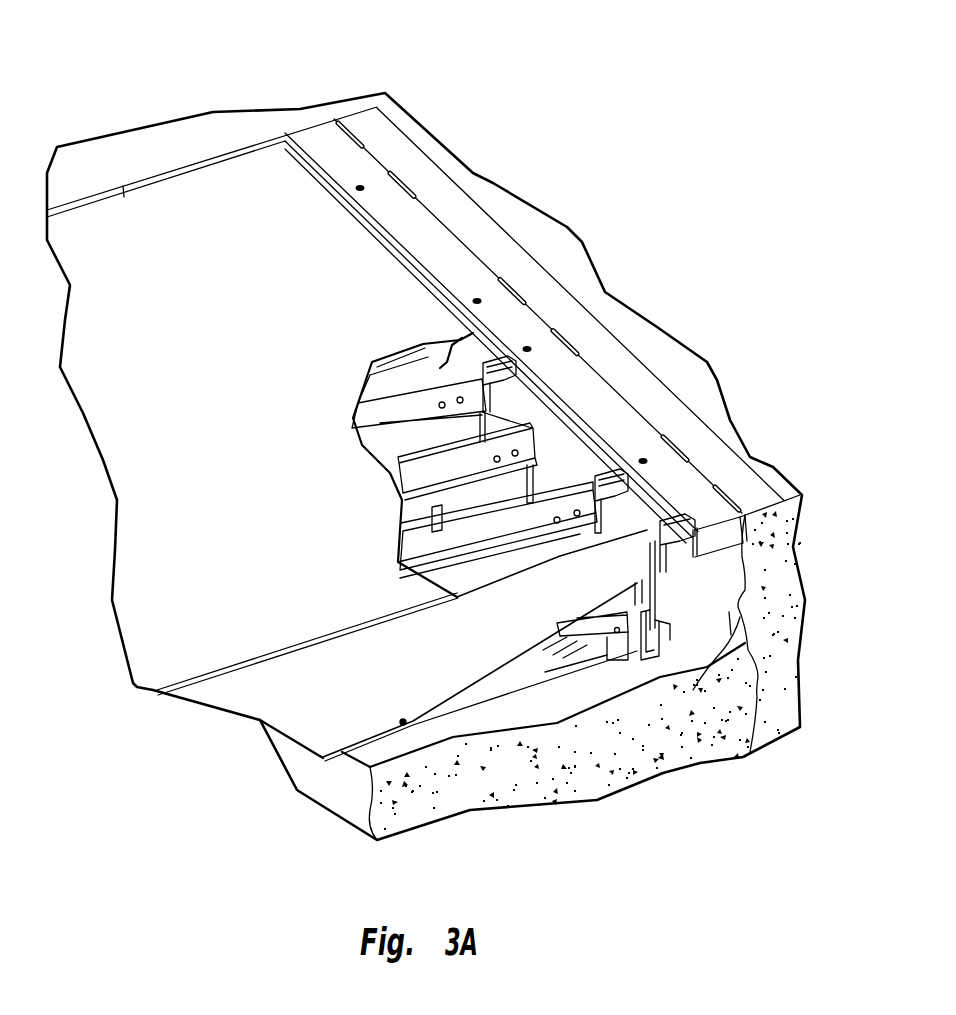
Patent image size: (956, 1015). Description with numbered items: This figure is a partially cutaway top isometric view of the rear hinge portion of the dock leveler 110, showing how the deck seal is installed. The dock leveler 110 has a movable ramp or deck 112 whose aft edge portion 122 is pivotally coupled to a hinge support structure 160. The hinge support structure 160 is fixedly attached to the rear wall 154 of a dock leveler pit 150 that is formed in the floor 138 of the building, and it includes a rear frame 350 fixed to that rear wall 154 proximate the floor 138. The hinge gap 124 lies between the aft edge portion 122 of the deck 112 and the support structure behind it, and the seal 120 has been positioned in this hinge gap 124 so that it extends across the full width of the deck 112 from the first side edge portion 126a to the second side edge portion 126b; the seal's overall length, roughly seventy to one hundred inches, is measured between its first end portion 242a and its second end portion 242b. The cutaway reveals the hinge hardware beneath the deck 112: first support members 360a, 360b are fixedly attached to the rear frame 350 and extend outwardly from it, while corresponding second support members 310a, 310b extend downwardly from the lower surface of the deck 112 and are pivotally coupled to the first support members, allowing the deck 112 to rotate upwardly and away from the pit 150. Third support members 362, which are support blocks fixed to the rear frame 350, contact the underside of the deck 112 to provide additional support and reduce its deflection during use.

The dock leveler 110 is at (330, 88).
The deck 112 is at (183, 207).
The first side edge portion 126a is at (123, 197).
The second side edge portion 126b is at (253, 717).
The second end portion 242b is at (280, 172).
The first end portion 242a is at (745, 515).
The aft edge portion 122 is at (360, 216).
The hinge gap 124 is at (450, 266).
The second support member 310b is at (547, 358).
The first support member 360b is at (540, 350).
The floor 138 is at (602, 307).
The seal 120 is at (547, 407).
The second support member 310a is at (625, 492).
The first support member 360a is at (683, 527).
The rear frame 350 is at (680, 592).
The third support member 362 is at (682, 618).
The rear wall 154 is at (740, 620).
The hinge support structure 160 is at (653, 600).
The dock leveler pit 150 is at (582, 686).